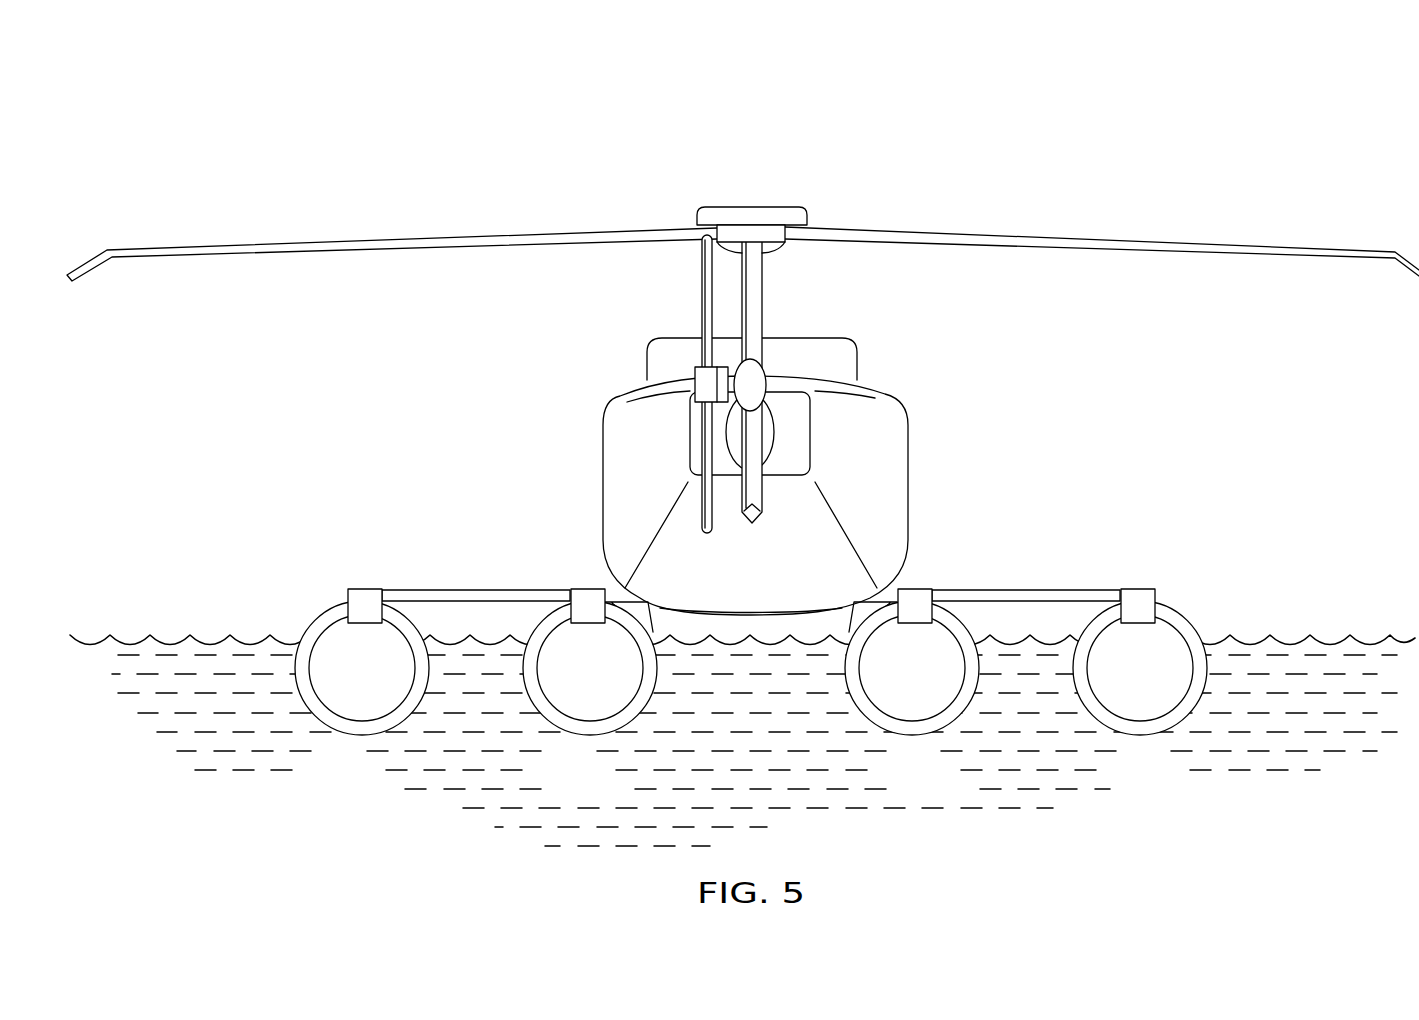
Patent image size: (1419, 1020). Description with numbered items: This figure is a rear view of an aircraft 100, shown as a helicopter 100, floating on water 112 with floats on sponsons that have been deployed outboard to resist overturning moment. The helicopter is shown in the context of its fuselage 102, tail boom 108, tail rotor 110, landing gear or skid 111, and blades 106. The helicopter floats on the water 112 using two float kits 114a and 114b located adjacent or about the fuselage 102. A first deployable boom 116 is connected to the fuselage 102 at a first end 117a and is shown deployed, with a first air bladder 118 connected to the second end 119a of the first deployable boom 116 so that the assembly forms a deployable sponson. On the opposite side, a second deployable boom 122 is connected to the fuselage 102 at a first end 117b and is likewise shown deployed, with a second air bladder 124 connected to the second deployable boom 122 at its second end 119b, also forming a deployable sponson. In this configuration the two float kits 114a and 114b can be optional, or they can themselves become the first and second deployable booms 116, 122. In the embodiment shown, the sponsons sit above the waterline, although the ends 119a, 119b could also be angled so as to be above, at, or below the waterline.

The aircraft 100 is at (1155, 98).
The fuselage 102 is at (766, 476).
The blades 106 is at (953, 233).
The tail boom 108 is at (805, 452).
The tail rotor 110 is at (700, 293).
The landing gear or skid 111 is at (853, 607).
The water 112 is at (170, 643).
The float kit 114a is at (591, 735).
The float kit 114b is at (910, 735).
The first deployable boom 116 is at (1032, 590).
The first end 117a is at (890, 598).
The first end 117b is at (613, 598).
The first air bladder 118 is at (1139, 735).
The second end 119a is at (1157, 589).
The second end 119b is at (346, 589).
The second deployable boom 122 is at (472, 590).
The second air bladder 124 is at (361, 735).